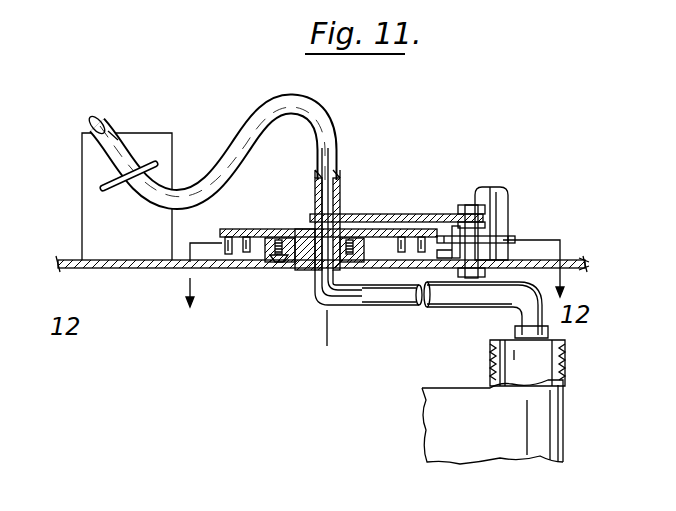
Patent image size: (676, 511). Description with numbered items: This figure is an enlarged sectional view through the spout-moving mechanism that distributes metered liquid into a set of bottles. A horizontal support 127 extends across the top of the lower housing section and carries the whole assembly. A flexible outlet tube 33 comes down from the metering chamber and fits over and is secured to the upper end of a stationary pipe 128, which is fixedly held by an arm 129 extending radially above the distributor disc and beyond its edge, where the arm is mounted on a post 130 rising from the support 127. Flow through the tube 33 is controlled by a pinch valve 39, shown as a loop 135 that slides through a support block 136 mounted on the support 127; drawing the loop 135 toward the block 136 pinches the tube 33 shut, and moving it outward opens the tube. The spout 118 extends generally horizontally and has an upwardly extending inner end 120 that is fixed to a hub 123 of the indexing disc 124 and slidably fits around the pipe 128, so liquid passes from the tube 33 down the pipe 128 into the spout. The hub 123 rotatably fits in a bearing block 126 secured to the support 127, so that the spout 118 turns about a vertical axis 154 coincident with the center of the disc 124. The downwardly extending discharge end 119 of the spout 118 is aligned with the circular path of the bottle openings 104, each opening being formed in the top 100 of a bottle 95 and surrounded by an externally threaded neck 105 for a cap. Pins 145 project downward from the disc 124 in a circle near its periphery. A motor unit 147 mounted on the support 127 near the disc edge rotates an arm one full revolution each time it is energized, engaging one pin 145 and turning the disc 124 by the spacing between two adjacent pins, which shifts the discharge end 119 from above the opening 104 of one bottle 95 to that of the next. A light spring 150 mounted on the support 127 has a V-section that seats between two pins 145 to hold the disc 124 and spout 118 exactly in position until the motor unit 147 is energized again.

The outlet tube 33 is at (308, 113).
The pinch valve 39 is at (136, 140).
The bottle 95 is at (515, 432).
The top 100 is at (460, 388).
The opening 104 is at (556, 362).
The externally threaded neck 105 is at (490, 355).
The spout 118 is at (472, 303).
The discharge end 119 is at (549, 332).
The inner end 120 is at (316, 290).
The hub 123 is at (302, 270).
The distributor disc 124 is at (264, 238).
The bearing block 126 is at (268, 258).
The horizontal support 127 is at (579, 260).
The stationary pipe 128 is at (338, 215).
The arm 129 is at (401, 215).
The post 130 is at (488, 230).
The loop 135 is at (158, 166).
The support block 136 is at (82, 204).
The pins 145 is at (224, 242).
The motor unit 147 is at (508, 200).
The spring 150 is at (452, 226).
The vertical axis 154 is at (325, 326).